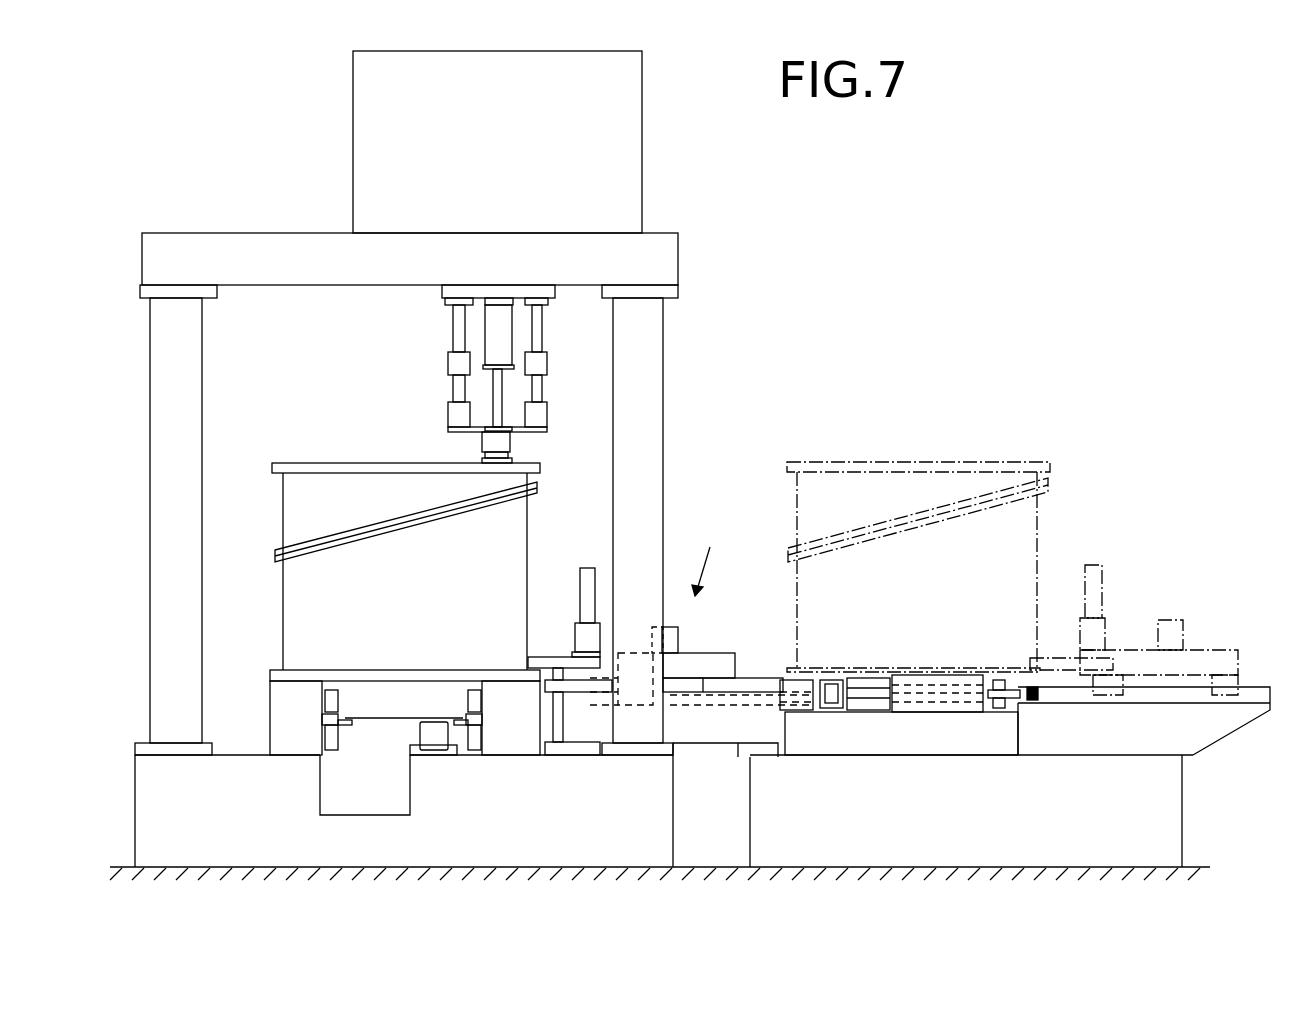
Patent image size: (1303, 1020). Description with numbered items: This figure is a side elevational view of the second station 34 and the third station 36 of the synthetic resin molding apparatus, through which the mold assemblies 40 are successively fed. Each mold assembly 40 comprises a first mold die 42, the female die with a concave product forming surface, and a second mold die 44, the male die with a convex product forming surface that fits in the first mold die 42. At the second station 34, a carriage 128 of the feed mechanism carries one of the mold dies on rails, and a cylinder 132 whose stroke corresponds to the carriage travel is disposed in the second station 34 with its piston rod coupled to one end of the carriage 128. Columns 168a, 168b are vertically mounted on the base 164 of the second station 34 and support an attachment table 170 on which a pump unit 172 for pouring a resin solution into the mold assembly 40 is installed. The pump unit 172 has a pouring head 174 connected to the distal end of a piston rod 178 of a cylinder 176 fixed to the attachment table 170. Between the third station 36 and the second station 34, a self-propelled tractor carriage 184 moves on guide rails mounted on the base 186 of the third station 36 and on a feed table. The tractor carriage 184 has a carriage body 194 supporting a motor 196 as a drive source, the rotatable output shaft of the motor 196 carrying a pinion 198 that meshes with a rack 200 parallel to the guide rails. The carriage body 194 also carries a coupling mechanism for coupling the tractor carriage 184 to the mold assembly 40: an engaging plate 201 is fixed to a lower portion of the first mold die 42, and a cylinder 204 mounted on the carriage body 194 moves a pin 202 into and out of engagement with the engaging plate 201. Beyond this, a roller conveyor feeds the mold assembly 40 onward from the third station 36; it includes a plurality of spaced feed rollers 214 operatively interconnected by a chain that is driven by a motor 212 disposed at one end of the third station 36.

The second station 34 is at (665, 172).
The third station 36 is at (819, 226).
The mold assembly 40 is at (258, 473).
The first mold die 42 is at (505, 543).
The second mold die 44 is at (283, 520).
The carriage 128 is at (390, 690).
The cylinder 132 is at (435, 735).
The base 164 is at (150, 805).
The column 168a is at (160, 390).
The column 168b is at (665, 375).
The attachment table 170 is at (308, 270).
The pump unit 172 is at (353, 152).
The pouring head 174 is at (505, 437).
The cylinder 176 is at (497, 337).
The piston rod 178 is at (497, 396).
The tractor carriage 184 is at (1190, 565).
The base 186 is at (1170, 805).
The carriage body 194 is at (718, 650).
The motor 196 is at (668, 623).
The pinion 198 is at (672, 700).
The rack 200 is at (765, 680).
The engaging plate 201 is at (548, 658).
The pin 202 is at (587, 700).
The cylinder 204 is at (583, 625).
The motor 212 is at (938, 715).
The feed rollers 214 is at (833, 670).